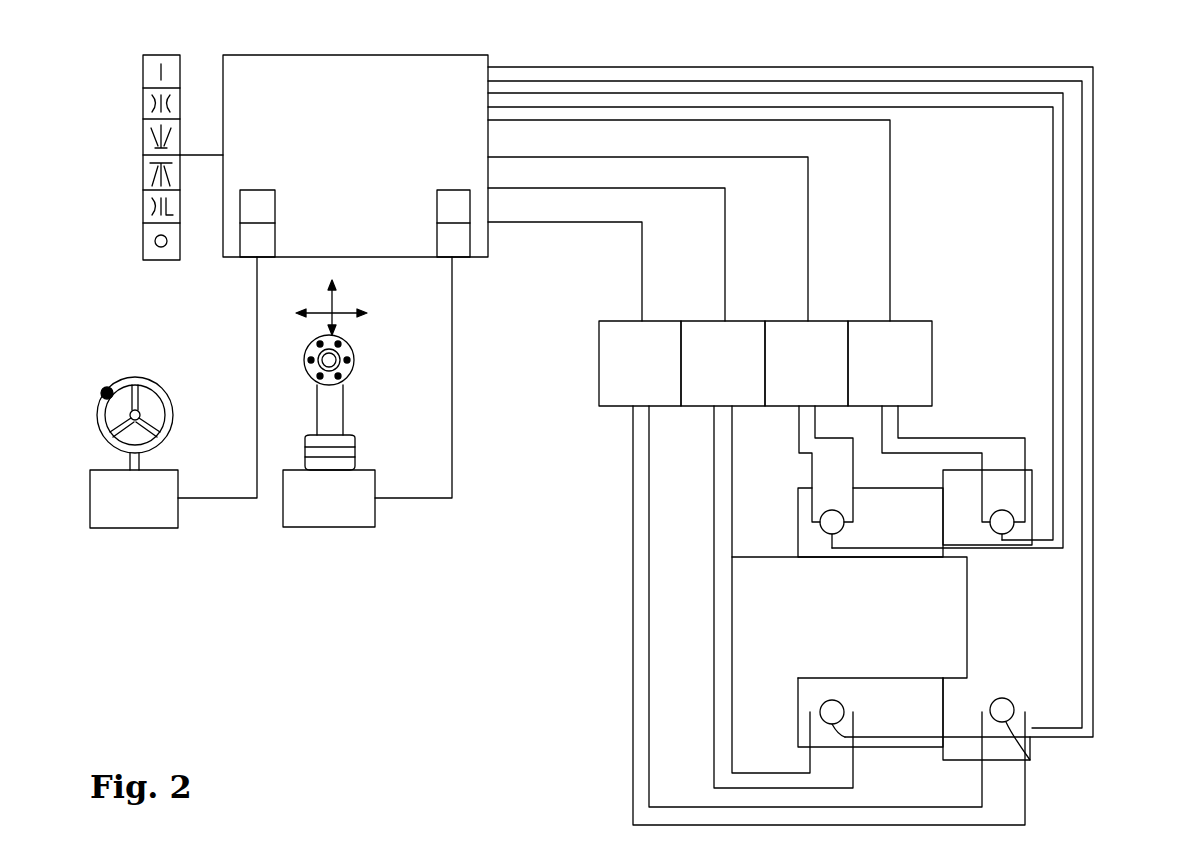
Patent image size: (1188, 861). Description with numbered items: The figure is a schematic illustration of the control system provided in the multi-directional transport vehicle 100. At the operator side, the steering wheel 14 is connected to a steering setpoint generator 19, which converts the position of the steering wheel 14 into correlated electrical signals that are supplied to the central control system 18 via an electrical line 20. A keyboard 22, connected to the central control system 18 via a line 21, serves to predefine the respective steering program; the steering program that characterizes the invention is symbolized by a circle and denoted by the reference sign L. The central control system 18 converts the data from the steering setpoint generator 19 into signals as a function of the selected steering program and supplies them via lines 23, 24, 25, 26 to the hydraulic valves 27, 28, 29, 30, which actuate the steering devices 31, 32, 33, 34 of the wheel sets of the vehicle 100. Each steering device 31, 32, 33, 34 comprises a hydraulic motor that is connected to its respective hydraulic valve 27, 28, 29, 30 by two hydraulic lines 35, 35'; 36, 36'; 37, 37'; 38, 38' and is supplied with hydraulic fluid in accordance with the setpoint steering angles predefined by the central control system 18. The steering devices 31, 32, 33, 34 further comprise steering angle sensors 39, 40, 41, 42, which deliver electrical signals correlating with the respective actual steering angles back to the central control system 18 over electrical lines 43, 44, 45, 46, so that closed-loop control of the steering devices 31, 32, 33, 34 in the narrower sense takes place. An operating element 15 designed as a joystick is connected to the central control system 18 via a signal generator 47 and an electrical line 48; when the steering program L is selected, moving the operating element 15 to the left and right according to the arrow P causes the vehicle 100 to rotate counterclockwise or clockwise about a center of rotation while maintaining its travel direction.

The steering wheel 14 is at (120, 378).
The operating element 15 is at (352, 377).
The central control system 18 is at (357, 174).
The steering setpoint generator 19 is at (142, 507).
The electrical line 20 is at (257, 335).
The line 21 is at (205, 160).
The keyboard 22 is at (138, 155).
The line 23 is at (640, 260).
The line 24 is at (724, 262).
The line 25 is at (807, 262).
The line 26 is at (889, 262).
The hydraulic valve 27 is at (654, 379).
The hydraulic valve 28 is at (736, 379).
The hydraulic valve 29 is at (819, 379).
The hydraulic valve 30 is at (902, 379).
The steering device 31 is at (823, 534).
The steering device 32 is at (1012, 542).
The steering device 33 is at (832, 698).
The steering device 34 is at (1003, 698).
The hydraulic line 35 is at (793, 615).
The hydraulic line 35' is at (815, 606).
The hydraulic line 36 is at (763, 597).
The hydraulic line 36' is at (771, 589).
The hydraulic line 37 is at (784, 464).
The hydraulic line 37' is at (834, 464).
The hydraulic line 38 is at (936, 464).
The hydraulic line 38' is at (961, 461).
The steering angle sensor 39 is at (845, 529).
The steering angle sensor 40 is at (990, 530).
The steering angle sensor 41 is at (846, 722).
The steering angle sensor 42 is at (1030, 760).
The electrical line 43 is at (1053, 197).
The electrical line 44 is at (1063, 240).
The electrical line 45 is at (1082, 283).
The electrical line 46 is at (1093, 327).
The signal generator 47 is at (345, 505).
The electrical line 48 is at (452, 338).
The multi-directional transport vehicle 100 is at (1008, 606).